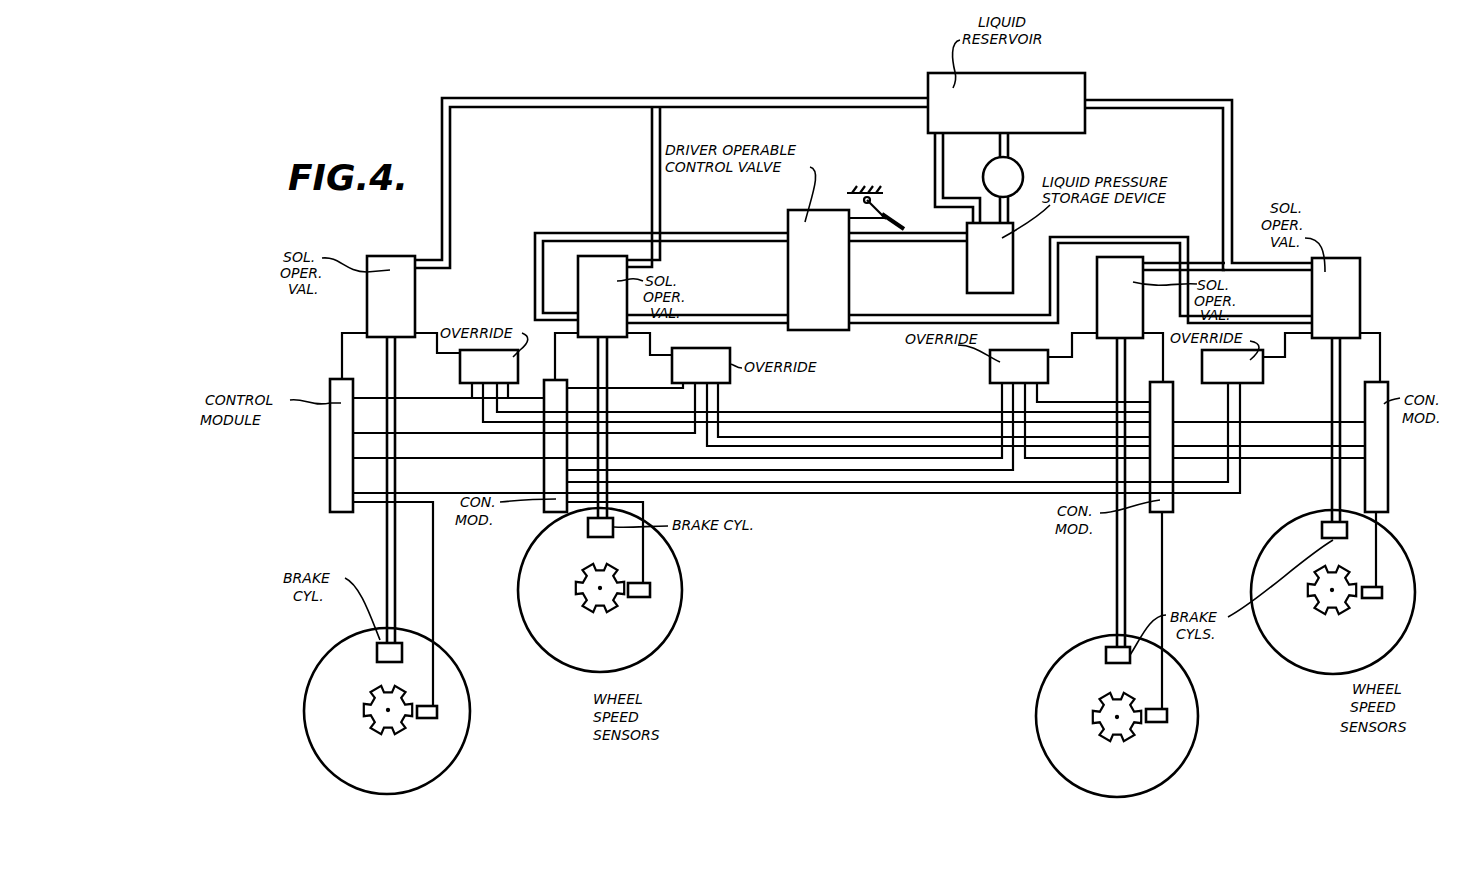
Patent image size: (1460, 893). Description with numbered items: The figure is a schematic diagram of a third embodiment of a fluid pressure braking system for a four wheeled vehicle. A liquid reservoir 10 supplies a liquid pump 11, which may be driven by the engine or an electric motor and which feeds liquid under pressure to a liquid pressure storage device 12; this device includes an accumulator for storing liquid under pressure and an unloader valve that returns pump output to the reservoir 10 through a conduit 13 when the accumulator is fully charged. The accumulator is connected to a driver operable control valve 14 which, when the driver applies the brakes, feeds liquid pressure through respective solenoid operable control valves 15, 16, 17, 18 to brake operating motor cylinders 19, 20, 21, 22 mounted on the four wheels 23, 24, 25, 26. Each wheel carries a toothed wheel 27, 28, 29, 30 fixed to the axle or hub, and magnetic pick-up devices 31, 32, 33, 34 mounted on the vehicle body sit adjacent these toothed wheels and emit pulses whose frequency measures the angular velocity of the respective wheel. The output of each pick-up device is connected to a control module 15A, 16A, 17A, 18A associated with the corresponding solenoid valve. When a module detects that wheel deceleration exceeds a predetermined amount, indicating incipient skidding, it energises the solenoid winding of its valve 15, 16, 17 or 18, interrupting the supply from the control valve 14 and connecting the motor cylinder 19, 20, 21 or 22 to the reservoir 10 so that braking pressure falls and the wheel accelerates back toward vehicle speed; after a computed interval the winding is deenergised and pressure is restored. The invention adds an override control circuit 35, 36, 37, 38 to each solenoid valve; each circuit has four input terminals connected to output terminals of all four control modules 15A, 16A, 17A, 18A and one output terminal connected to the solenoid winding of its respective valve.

The liquid reservoir 10 is at (1015, 111).
The liquid pump 11 is at (1013, 187).
The liquid pressure storage device 12 is at (998, 271).
The conduit 13 is at (935, 160).
The driver operable control valve 14 is at (826, 273).
The solenoid operable control valve 15 is at (402, 310).
The solenoid operable control valve 16 is at (613, 310).
The solenoid operable control valve 17 is at (1131, 311).
The solenoid operable control valve 18 is at (1346, 311).
The control module 15A is at (343, 515).
The control module 16A is at (548, 468).
The control module 17A is at (1173, 504).
The control module 18A is at (1370, 476).
The brake operating motor cylinder 19 is at (378, 652).
The brake operating motor cylinder 20 is at (588, 527).
The brake operating motor cylinder 21 is at (1106, 655).
The brake operating motor cylinder 22 is at (1325, 532).
The wheel 23 is at (445, 745).
The wheel 24 is at (526, 578).
The wheel 25 is at (1160, 767).
The wheel 26 is at (1260, 578).
The toothed wheel 27 is at (392, 722).
The toothed wheel 28 is at (608, 600).
The toothed wheel 29 is at (1110, 730).
The toothed wheel 30 is at (1332, 604).
The magnetic pick-up device 31 is at (585, 698).
The magnetic pick-up device 32 is at (657, 693).
The magnetic pick-up device 33 is at (1340, 702).
The magnetic pick-up device 34 is at (1378, 678).
The override control circuit 35 is at (500, 377).
The override control circuit 36 is at (712, 375).
The override control circuit 37 is at (1029, 377).
The override control circuit 38 is at (1242, 377).